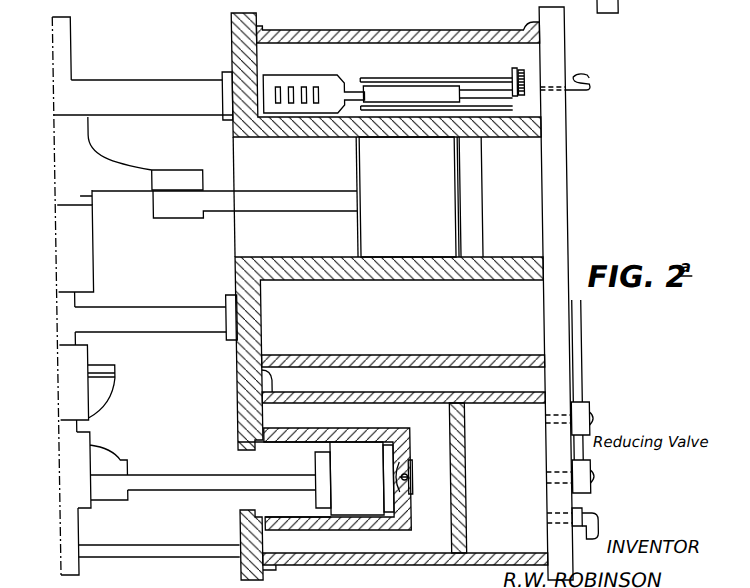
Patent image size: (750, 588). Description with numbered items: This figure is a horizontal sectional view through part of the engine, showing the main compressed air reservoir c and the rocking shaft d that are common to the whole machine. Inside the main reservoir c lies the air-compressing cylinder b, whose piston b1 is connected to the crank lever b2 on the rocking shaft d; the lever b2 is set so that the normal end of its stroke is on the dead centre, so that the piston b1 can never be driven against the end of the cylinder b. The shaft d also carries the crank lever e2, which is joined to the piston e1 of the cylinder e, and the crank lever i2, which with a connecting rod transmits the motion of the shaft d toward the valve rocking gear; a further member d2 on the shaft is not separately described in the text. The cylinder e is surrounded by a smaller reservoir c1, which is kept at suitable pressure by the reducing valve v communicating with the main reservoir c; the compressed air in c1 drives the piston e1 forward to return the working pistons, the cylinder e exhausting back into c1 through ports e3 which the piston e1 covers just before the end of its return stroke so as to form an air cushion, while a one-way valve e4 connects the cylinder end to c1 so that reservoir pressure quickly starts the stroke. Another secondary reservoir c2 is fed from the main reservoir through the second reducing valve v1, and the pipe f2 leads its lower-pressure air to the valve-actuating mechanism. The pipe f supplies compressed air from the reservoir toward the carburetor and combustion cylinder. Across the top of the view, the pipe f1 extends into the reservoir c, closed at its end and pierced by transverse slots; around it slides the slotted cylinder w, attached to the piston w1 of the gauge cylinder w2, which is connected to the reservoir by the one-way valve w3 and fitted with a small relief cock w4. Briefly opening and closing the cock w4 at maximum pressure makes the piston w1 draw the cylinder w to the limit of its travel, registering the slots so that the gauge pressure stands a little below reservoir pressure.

The rocking shaft d is at (140, 296).
The pipe f1 is at (143, 96).
The crank lever b2 is at (203, 167).
The block d2 is at (68, 244).
The pipe f is at (135, 320).
The crank lever i2 is at (84, 382).
The crank lever e2 is at (87, 470).
The cylinder e is at (210, 479).
The compressed air reservoir c is at (389, 296).
The air-compressing cylinder b is at (322, 197).
The piston b1 is at (421, 197).
The cylinder w is at (325, 96).
The piston w1 is at (415, 93).
The gauge cylinder w2 is at (476, 93).
The one-way valve w3 is at (527, 72).
The relief cock w4 is at (584, 88).
The ports e3 is at (366, 431).
The piston e1 is at (362, 478).
The one-way valve e4 is at (400, 478).
The smaller air reservoir c1 is at (444, 478).
The secondary air reservoir c2 is at (404, 511).
The reducing valve v is at (605, 430).
The second reducing valve v1 is at (603, 457).
The pipe f2 is at (592, 536).